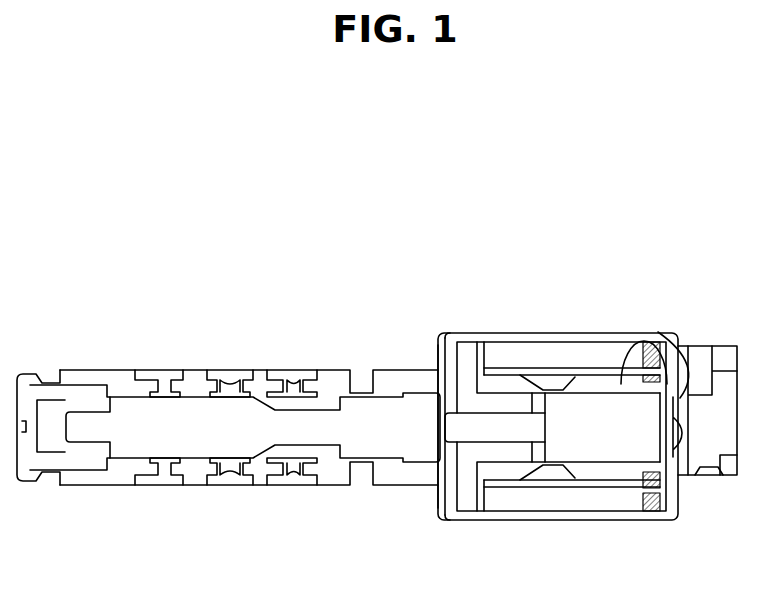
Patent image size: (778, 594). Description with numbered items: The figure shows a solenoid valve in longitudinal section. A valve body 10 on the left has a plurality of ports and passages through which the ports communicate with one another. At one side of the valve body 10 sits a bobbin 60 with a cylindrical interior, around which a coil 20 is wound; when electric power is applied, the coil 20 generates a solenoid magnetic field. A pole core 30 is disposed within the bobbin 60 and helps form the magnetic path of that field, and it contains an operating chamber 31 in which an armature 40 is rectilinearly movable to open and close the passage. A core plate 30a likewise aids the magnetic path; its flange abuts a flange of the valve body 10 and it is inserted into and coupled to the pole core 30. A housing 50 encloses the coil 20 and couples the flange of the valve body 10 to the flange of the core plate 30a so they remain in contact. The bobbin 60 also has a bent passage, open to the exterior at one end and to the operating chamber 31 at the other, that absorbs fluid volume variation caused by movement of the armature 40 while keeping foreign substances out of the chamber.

The valve body 10 is at (390, 385).
The coil 20 is at (516, 350).
The pole core 30 is at (667, 348).
The core plate 30a is at (466, 353).
The operating chamber 31 is at (685, 350).
The armature 40 is at (592, 412).
The housing 50 is at (560, 345).
The bobbin 60 is at (503, 487).